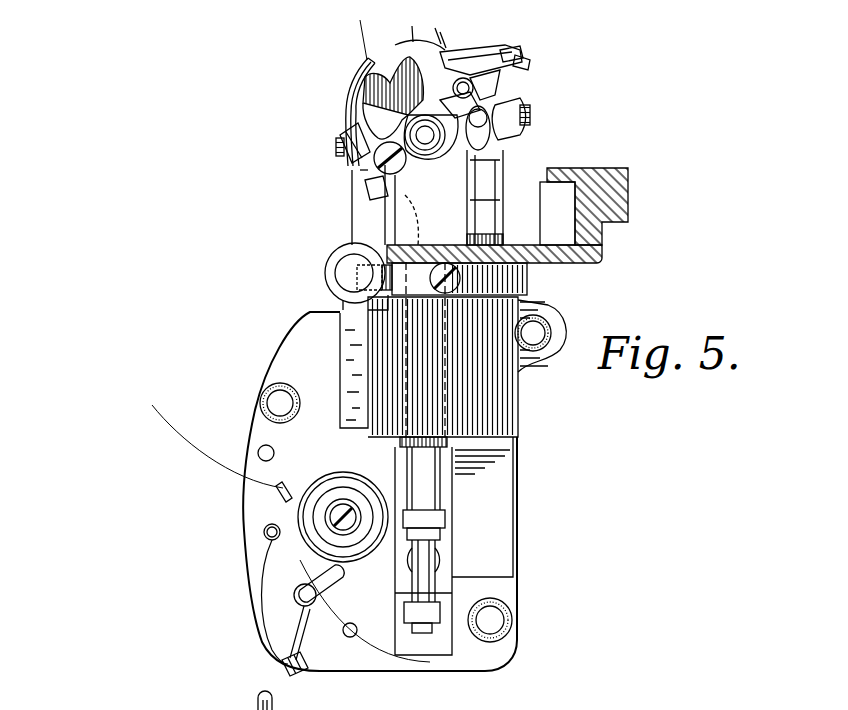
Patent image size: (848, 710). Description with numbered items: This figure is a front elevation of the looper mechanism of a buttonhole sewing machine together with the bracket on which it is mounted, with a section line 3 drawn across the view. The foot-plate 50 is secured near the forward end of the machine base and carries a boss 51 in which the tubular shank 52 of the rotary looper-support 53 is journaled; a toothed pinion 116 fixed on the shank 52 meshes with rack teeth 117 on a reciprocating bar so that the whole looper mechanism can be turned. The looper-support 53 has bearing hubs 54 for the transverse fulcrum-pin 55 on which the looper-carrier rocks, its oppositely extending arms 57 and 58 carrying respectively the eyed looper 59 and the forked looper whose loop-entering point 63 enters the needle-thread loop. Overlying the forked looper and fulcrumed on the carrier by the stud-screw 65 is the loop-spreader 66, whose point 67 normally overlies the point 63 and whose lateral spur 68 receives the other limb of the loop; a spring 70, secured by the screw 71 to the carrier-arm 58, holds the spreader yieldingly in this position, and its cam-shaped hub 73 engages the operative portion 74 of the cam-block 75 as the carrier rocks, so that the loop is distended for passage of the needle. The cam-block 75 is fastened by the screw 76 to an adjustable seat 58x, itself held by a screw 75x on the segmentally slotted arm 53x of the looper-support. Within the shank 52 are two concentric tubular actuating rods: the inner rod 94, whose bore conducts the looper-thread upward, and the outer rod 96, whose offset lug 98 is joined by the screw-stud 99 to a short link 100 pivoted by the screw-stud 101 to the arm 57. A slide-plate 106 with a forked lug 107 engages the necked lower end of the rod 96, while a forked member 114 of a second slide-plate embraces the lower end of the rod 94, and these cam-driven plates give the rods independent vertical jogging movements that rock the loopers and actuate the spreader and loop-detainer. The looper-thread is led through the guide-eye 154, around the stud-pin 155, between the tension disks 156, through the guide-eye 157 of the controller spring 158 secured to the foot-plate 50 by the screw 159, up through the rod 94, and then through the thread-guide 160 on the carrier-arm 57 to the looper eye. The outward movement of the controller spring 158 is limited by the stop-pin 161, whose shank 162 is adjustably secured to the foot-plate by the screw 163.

The section line 3 is at (359, 47).
The foot-plate 50 is at (380, 491).
The boss 51 is at (453, 349).
The tubular shank 52 is at (423, 442).
The rotary looper-support 53 is at (490, 206).
The segmentally slotted arm 53x is at (500, 162).
The bearing hubs 54 is at (431, 138).
The transverse fulcrum-pin 55 is at (425, 135).
The looper-carrier arm 57 is at (393, 98).
The looper-carrier arm 58 is at (451, 102).
The adjustable seat 58x is at (490, 145).
The eyed looper 59 is at (347, 90).
The loop-entering point 63 is at (398, 44).
The stud-screw 65 is at (510, 45).
The loop-spreader 66 is at (462, 55).
The point of loop-spreader 67 is at (411, 24).
The lateral spur 68 is at (434, 27).
The spring 70 is at (456, 82).
The screw 71 is at (450, 83).
The cam-shaped hub 73 is at (523, 60).
The operative portion of cam-block 74 is at (485, 82).
The cam-block 75 is at (520, 128).
The block portion 75x is at (456, 161).
The fastening screw 76 is at (536, 109).
The tubular actuating rod 94 is at (395, 585).
The second tubular actuating rod 96 is at (423, 478).
The offset lug 98 is at (412, 184).
The screw-stud 99 is at (366, 192).
The short link 100 is at (362, 177).
The screw-stud 101 is at (398, 168).
The slide-plate 106 is at (446, 556).
The forked lug 107 is at (446, 519).
The forked member 114 is at (442, 608).
The toothed pinion 116 is at (385, 290).
The rack teeth 117 is at (361, 277).
The guide-eye 154 is at (289, 480).
The stud-pin 155 is at (343, 514).
The tension disks 156 is at (350, 478).
The guide-eye 157 is at (309, 664).
The controller spring 158 is at (268, 633).
The screw 159 is at (266, 520).
The thread-guide 160 is at (352, 120).
The stop-pin 161 is at (260, 622).
The shank 162 is at (317, 583).
The screw 163 is at (337, 617).